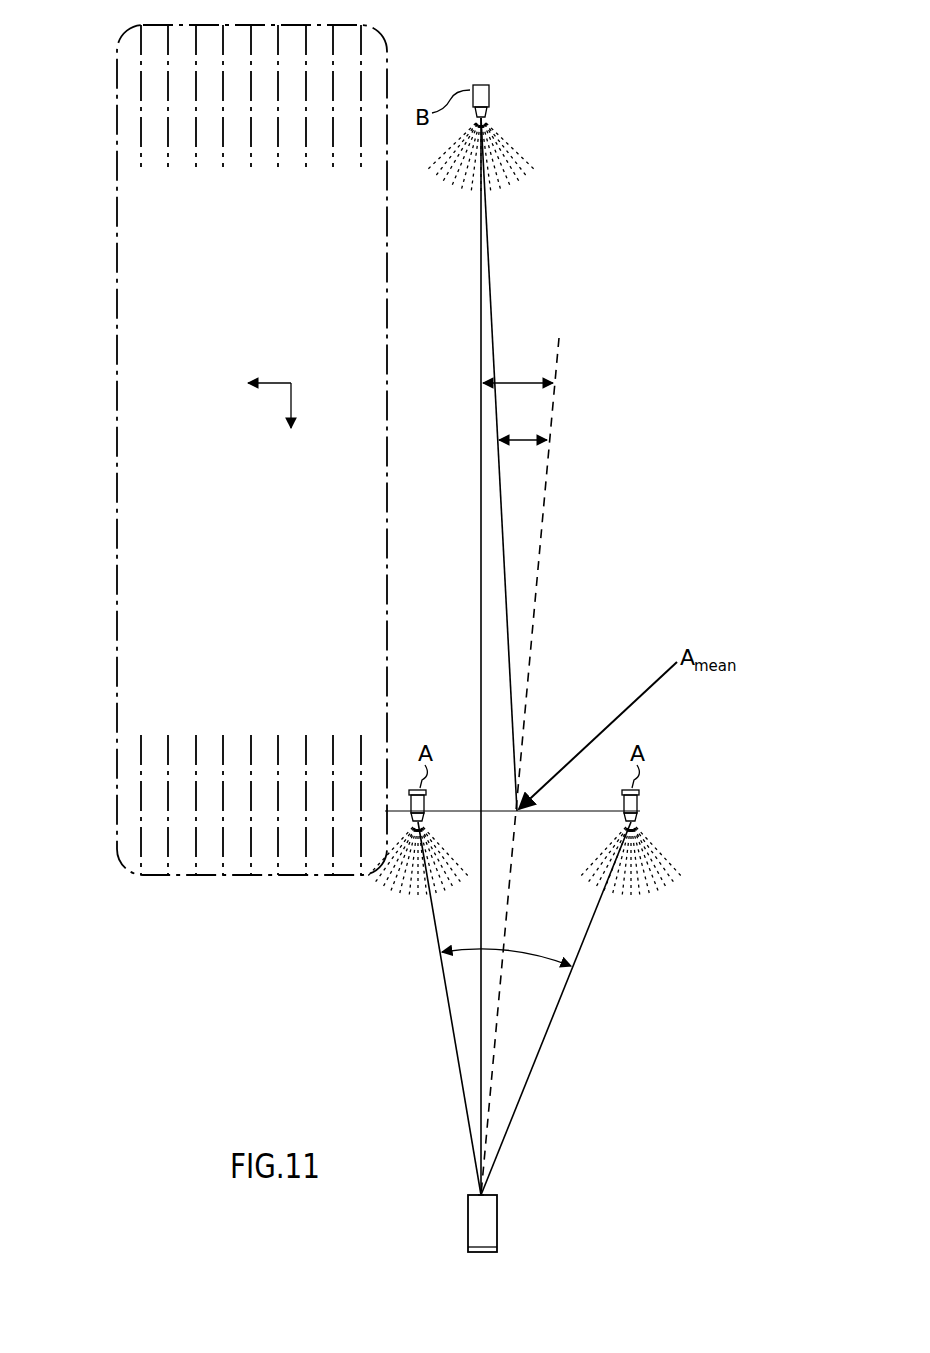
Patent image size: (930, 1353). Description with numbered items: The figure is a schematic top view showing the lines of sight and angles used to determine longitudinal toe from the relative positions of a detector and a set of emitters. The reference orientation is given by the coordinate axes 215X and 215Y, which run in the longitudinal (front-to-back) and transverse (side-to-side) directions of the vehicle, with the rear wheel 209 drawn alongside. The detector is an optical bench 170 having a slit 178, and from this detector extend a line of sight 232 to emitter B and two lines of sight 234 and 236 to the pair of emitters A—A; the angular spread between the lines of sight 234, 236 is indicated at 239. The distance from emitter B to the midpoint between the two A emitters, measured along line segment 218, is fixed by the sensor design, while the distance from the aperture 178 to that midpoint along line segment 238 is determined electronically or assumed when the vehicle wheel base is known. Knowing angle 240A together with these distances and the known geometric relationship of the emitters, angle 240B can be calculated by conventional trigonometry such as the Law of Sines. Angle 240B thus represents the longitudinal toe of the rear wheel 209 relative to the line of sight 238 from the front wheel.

The rear wheel 209 is at (117, 618).
The coordinate axis 215X is at (293, 400).
The coordinate axis 215Y is at (272, 383).
The line of sight 232 is at (483, 212).
The line segment 218 is at (505, 597).
The line segment 238 is at (546, 521).
The angle 240A is at (517, 383).
The angle 240B is at (523, 440).
The angle between lines 234 and 236 239 is at (515, 950).
The line of sight 234 is at (446, 985).
The line of sight 236 is at (590, 925).
The slit 178 is at (478, 1194).
The optical bench 170 is at (497, 1228).